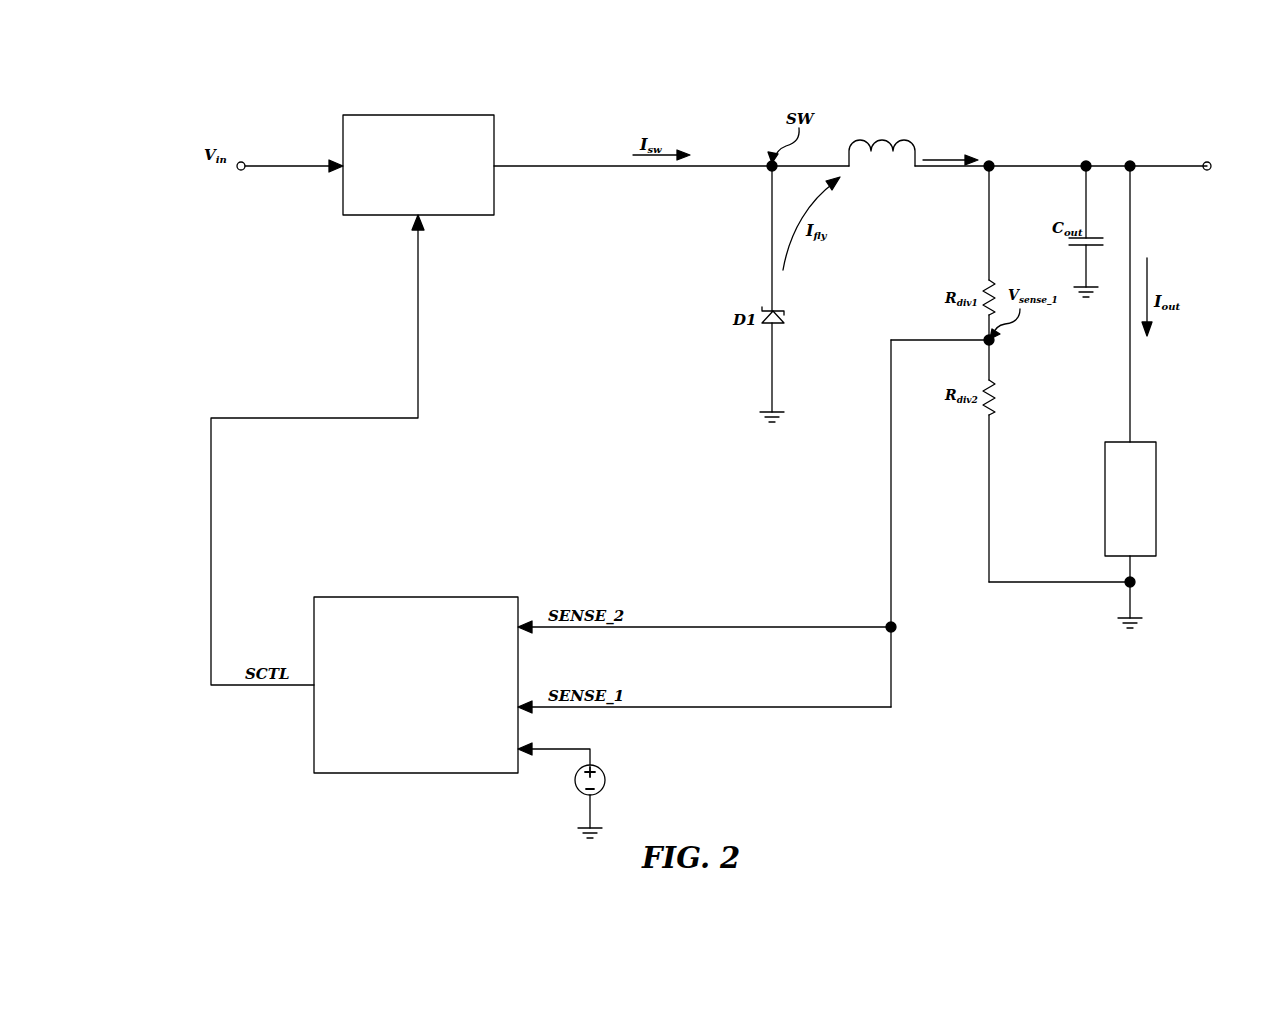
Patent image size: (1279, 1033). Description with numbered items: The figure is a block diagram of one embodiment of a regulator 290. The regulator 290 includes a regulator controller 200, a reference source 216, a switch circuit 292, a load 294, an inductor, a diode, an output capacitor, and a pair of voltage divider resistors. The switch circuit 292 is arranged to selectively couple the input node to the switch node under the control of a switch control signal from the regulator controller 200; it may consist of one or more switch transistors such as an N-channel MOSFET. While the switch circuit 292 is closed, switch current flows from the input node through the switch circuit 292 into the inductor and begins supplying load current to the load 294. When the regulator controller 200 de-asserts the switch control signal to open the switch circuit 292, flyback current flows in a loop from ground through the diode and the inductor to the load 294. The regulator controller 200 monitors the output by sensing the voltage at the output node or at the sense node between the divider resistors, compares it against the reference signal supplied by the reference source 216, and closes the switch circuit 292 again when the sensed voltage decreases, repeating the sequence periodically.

The regulator controller 200 is at (418, 597).
The reference source 216 is at (604, 770).
The regulator 290 is at (1088, 114).
The switch circuit 292 is at (418, 115).
The load 294 is at (1105, 498).